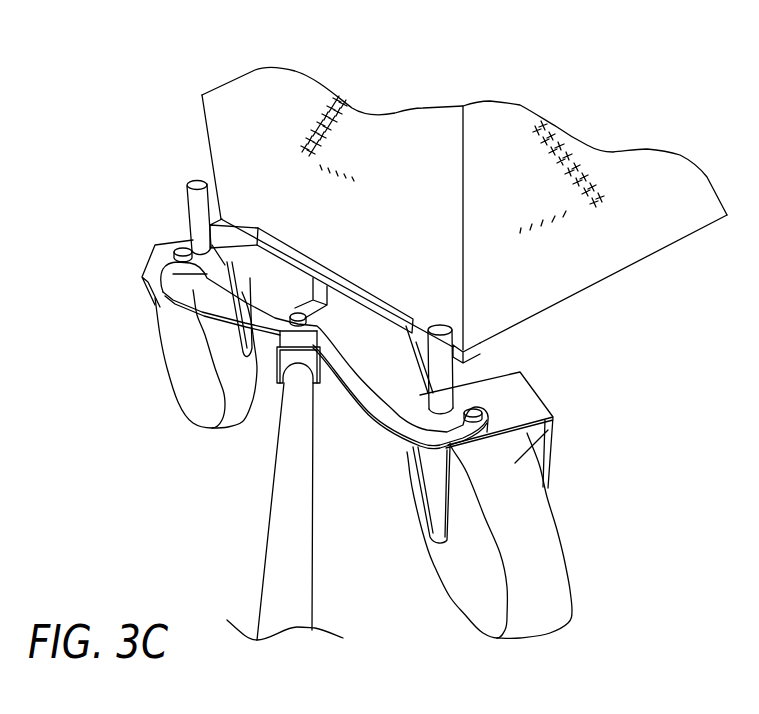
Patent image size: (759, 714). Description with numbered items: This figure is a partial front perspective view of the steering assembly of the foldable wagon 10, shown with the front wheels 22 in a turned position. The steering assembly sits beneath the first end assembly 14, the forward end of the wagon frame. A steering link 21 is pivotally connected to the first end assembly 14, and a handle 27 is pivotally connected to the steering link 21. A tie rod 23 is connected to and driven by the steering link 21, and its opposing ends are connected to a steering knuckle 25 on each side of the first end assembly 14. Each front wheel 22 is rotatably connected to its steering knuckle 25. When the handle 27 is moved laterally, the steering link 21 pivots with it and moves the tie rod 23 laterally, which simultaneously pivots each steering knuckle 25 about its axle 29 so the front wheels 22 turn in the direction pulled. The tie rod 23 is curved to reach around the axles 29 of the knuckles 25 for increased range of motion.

The foldable wagon 10 is at (610, 203).
The first end assembly 14 is at (290, 257).
The steering link 21 is at (278, 365).
The front wheel 22 is at (183, 398).
The tie rod 23 is at (373, 405).
The steering knuckle 25 is at (145, 270).
The handle 27 is at (277, 550).
The axle 29 is at (193, 187).